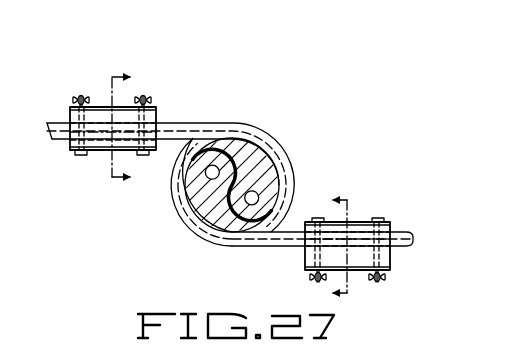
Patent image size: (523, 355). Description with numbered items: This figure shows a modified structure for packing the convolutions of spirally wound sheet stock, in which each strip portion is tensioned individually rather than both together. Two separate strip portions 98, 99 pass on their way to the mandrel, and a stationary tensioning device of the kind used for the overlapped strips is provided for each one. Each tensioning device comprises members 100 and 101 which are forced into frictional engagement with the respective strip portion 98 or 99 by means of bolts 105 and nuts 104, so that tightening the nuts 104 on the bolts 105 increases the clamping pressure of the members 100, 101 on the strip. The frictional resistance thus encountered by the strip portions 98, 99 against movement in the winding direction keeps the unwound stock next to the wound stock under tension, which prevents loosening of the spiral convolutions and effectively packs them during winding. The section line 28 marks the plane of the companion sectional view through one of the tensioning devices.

The section line 28 is at (234, 186).
The strip portion 98 is at (193, 123).
The strip portion 99 is at (270, 248).
The member 100 is at (70, 146).
The member 101 is at (93, 106).
The nut 104 is at (143, 157).
The bolt 105 is at (145, 99).